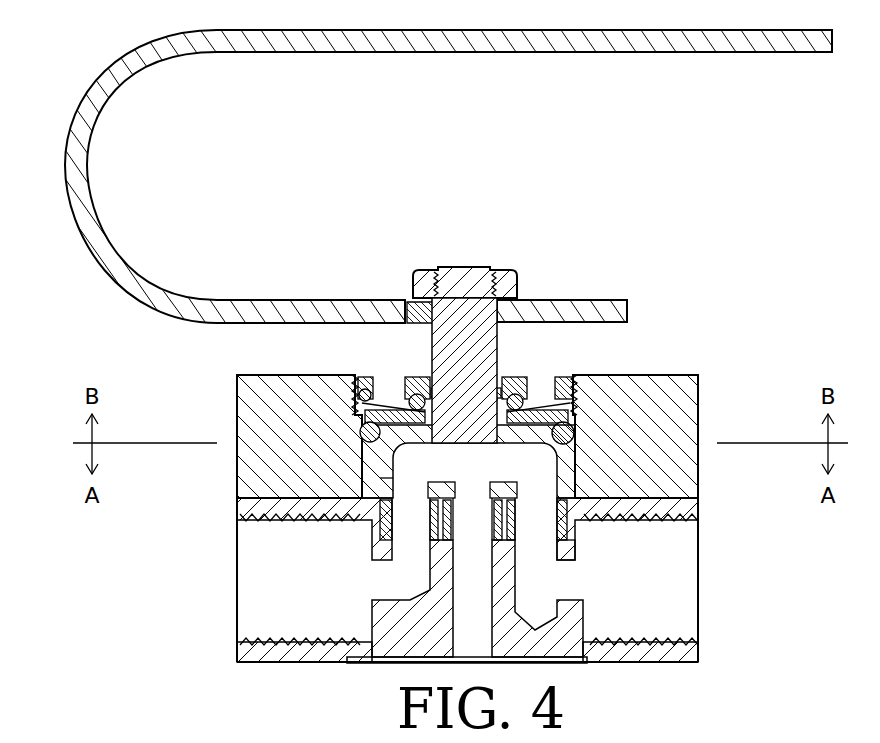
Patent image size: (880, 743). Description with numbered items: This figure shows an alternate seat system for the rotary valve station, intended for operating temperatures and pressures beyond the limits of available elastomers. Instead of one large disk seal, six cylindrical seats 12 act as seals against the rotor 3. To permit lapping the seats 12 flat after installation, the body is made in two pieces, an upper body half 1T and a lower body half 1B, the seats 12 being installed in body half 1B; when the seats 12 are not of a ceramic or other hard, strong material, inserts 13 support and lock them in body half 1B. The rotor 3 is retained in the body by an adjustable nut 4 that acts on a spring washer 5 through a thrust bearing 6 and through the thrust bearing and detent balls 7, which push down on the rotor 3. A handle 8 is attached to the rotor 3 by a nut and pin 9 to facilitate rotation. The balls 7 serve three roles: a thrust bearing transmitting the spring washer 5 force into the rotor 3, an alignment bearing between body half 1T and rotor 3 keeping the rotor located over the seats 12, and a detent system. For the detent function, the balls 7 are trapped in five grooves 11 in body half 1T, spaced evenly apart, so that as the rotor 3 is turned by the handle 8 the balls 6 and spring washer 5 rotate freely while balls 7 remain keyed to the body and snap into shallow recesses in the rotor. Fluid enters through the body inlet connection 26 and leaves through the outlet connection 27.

The body half 1T is at (632, 380).
The body half 1B is at (667, 658).
The rotor 3 is at (385, 452).
The adjustable nut 4 is at (507, 388).
The spring washer 5 is at (383, 408).
The thrust bearing 6 is at (417, 394).
The thrust bearing and detent balls 7 is at (362, 423).
The handle 8 is at (265, 298).
The nut and pin 9 is at (408, 302).
The grooves 11 is at (362, 455).
The seats 12 is at (563, 530).
The inserts 13 is at (560, 547).
The body inlet connection 26 is at (257, 581).
The outlet connection 27 is at (685, 583).